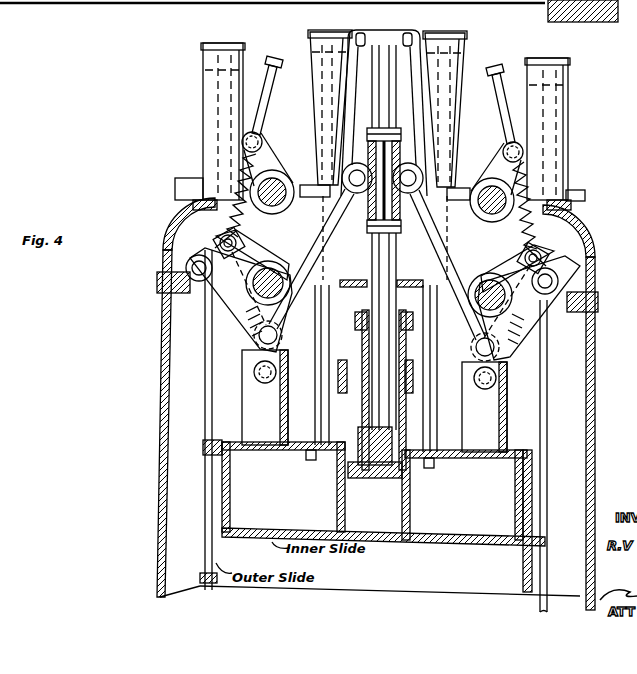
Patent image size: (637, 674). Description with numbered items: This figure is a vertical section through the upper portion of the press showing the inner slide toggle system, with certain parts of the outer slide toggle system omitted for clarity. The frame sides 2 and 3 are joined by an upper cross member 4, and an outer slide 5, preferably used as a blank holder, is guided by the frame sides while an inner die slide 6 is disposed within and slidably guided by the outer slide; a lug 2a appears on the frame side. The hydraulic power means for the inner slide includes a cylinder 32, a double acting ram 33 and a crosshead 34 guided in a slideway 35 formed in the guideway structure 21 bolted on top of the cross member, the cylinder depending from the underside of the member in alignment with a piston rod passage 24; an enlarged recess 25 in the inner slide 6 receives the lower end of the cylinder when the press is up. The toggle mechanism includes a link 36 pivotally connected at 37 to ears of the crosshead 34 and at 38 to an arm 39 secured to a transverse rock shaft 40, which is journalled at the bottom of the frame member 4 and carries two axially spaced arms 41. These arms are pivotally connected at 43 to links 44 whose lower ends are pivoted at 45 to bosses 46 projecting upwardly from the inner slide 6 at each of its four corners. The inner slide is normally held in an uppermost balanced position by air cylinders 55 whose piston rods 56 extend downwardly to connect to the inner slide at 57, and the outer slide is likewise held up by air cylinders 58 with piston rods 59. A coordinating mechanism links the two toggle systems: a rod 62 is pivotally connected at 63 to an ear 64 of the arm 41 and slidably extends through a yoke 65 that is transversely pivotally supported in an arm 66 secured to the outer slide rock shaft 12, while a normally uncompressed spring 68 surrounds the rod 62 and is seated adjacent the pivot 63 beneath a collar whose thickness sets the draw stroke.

The frame side 2 is at (162, 378).
The lug on outer slide 2a is at (157, 280).
The frame side 3 is at (596, 407).
The upper cross member 4 is at (598, 263).
The outer slide 5 is at (526, 568).
The inner die slide 6 is at (470, 544).
The transverse rock shaft 12 is at (282, 186).
The guideway structure 21 is at (428, 24).
The piston rod passage 24 is at (368, 282).
The enlarged recess 25 is at (395, 495).
The cylinder 32 is at (360, 353).
The double acting ram 33 is at (362, 433).
The crosshead 34 is at (368, 160).
The slideway 35 is at (385, 108).
The link 36 is at (320, 250).
The pivotal connection 37 is at (357, 170).
The pivotal connection 38 is at (278, 338).
The arm 39 is at (280, 322).
The transverse rock shaft 40 is at (270, 272).
The arm 41 is at (242, 262).
The pivotal connection 43 is at (192, 267).
The link 44 is at (235, 325).
The pivotal connection 45 is at (256, 372).
The boss 46 is at (246, 408).
The air cylinder 55 is at (316, 43).
The piston rod 56 is at (326, 312).
The connection 57 is at (308, 460).
The air cylinder 58 is at (204, 128).
The piston rod 59 is at (212, 361).
The rod 62 is at (268, 100).
The pivotal connection 63 is at (237, 243).
The ear 64 is at (220, 247).
The yoke 65 is at (262, 138).
The arm 66 is at (268, 156).
The spring 68 is at (242, 226).